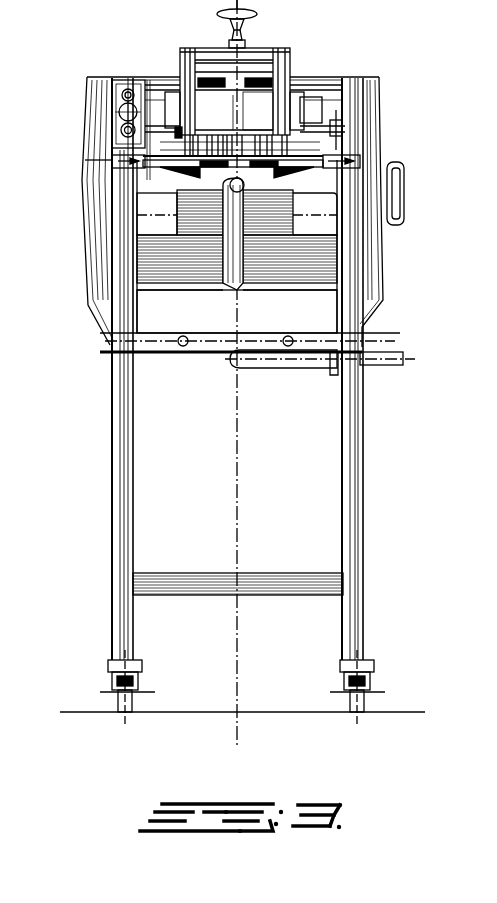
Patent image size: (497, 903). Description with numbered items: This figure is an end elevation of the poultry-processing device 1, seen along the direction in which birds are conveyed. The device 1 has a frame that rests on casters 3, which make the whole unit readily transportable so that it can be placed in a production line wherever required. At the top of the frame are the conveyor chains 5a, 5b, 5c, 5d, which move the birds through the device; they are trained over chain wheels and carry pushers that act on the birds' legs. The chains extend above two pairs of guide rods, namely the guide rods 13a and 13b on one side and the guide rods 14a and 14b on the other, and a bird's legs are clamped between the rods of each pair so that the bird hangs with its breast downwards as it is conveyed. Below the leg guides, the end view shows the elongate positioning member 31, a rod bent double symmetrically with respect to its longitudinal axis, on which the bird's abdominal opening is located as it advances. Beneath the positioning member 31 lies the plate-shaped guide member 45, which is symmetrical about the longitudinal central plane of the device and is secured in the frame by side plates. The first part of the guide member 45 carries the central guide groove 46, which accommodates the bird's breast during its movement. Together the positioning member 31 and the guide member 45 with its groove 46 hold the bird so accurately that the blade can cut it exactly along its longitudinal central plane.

The device 1 is at (376, 442).
The casters 3 is at (117, 703).
The conveyor chain 5a is at (173, 103).
The conveyor chain 5b is at (208, 100).
The conveyor chain 5c is at (252, 105).
The conveyor chain 5d is at (297, 107).
The guide rod 13a is at (172, 170).
The guide rod 13b is at (208, 163).
The guide rod 14a is at (337, 128).
The guide rod 14b is at (268, 163).
The elongate positioning member 31 is at (242, 165).
The guide member 45 is at (330, 266).
The central guide groove 46 is at (226, 262).